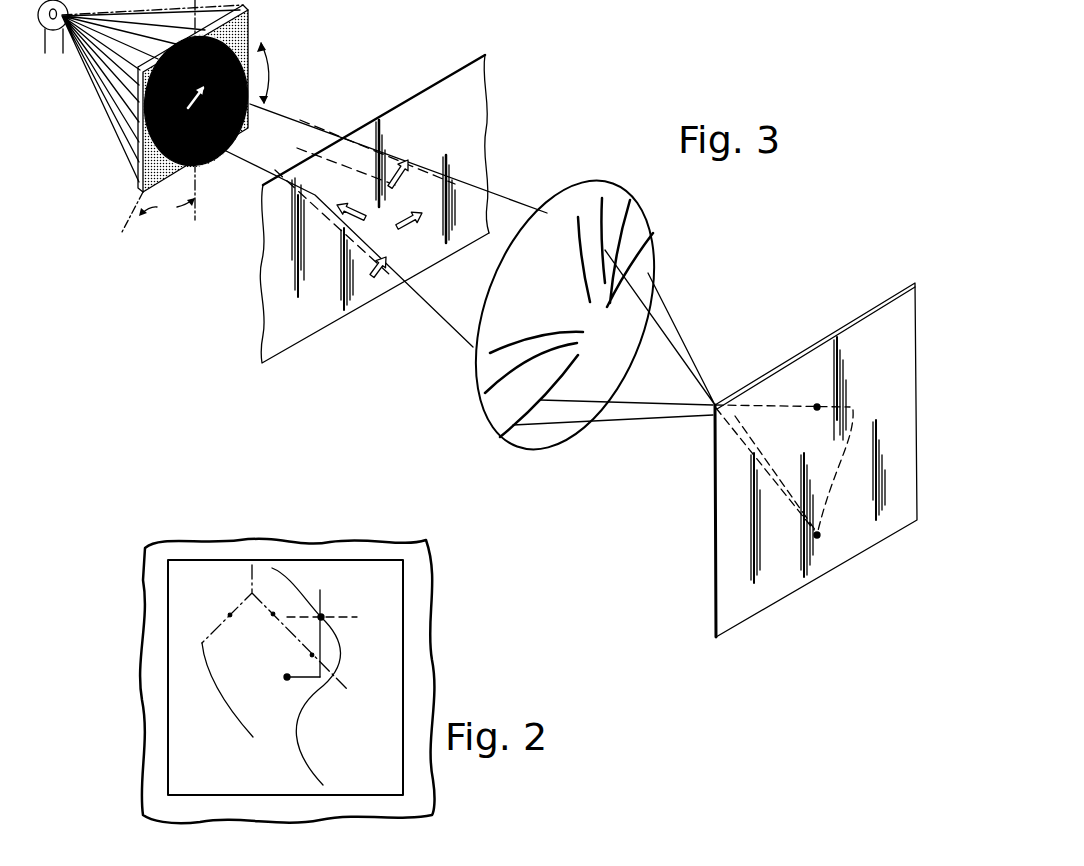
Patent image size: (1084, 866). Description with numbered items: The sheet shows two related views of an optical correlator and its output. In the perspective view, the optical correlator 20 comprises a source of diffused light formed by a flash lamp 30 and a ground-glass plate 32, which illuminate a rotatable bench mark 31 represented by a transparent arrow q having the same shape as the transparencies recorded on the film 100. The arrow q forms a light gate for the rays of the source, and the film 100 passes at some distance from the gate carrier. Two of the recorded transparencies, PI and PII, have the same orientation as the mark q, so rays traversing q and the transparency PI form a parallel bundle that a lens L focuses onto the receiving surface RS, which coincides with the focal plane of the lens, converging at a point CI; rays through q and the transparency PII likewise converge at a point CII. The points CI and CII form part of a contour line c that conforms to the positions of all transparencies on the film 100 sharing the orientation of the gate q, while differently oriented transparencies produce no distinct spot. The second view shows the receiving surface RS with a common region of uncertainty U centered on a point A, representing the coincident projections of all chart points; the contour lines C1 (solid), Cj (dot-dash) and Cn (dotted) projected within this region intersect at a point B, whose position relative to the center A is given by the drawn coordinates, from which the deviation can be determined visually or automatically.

In FIG. 3, the flash lamp 30 is at (40, 28).
In FIG. 3, the rotatable bench mark 31 is at (210, 158).
In FIG. 3, the ground-glass plate 32 is at (248, 10).
In FIG. 3, the transparent arrow q is at (143, 135).
In FIG. 3, the optical correlator 20 is at (515, 93).
In FIG. 3, the film 100 is at (286, 342).
In FIG. 3, the transparency PI is at (400, 162).
In FIG. 3, the transparency PII is at (383, 264).
In FIG. 3, the lens L is at (628, 188).
In FIG. 3, the receiving surface RS is at (903, 297).
In FIG. 2, the receiving surface RS is at (322, 540).
In FIG. 3, the contour line c is at (790, 404).
In FIG. 3, the point CII is at (817, 405).
In FIG. 3, the point CI is at (817, 537).
In FIG. 2, the region of uncertainty U is at (397, 782).
In FIG. 2, the point A is at (285, 677).
In FIG. 2, the point B is at (321, 617).
In FIG. 2, the contour line Cj is at (227, 690).
In FIG. 2, the contour line Cn is at (357, 617).
In FIG. 2, the contour line C1 is at (300, 733).